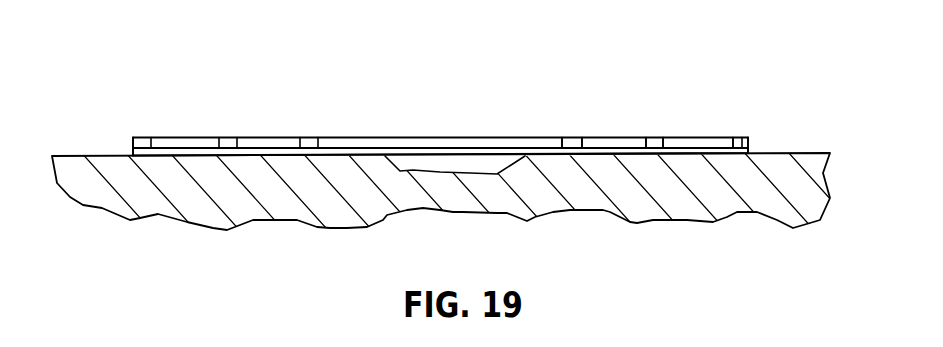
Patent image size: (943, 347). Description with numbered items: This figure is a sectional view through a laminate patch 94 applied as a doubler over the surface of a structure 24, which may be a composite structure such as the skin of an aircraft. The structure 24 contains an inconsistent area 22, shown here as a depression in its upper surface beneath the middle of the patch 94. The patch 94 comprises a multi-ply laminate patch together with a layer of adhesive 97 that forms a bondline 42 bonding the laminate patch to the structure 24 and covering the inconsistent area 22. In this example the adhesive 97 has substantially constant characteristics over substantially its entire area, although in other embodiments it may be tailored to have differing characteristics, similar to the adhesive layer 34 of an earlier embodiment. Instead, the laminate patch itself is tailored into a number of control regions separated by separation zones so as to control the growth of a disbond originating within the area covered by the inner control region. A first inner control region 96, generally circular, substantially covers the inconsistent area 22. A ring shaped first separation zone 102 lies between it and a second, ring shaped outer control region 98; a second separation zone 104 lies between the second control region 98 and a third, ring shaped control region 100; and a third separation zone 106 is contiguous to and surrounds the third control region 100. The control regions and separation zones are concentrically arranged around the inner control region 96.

The laminate patch 94 is at (162, 96).
The bondline 42 is at (125, 152).
The adhesive layer 34 is at (331, 153).
The first inner control region 96 is at (453, 145).
The first separation zone 102 is at (572, 142).
The second outer control region 98 is at (617, 143).
The second separation zone 104 is at (653, 143).
The third control region 100 is at (702, 142).
The third separation zone 106 is at (740, 143).
The layer of adhesive 97 is at (756, 147).
The structure 24 is at (260, 195).
The inconsistent area 22 is at (500, 160).